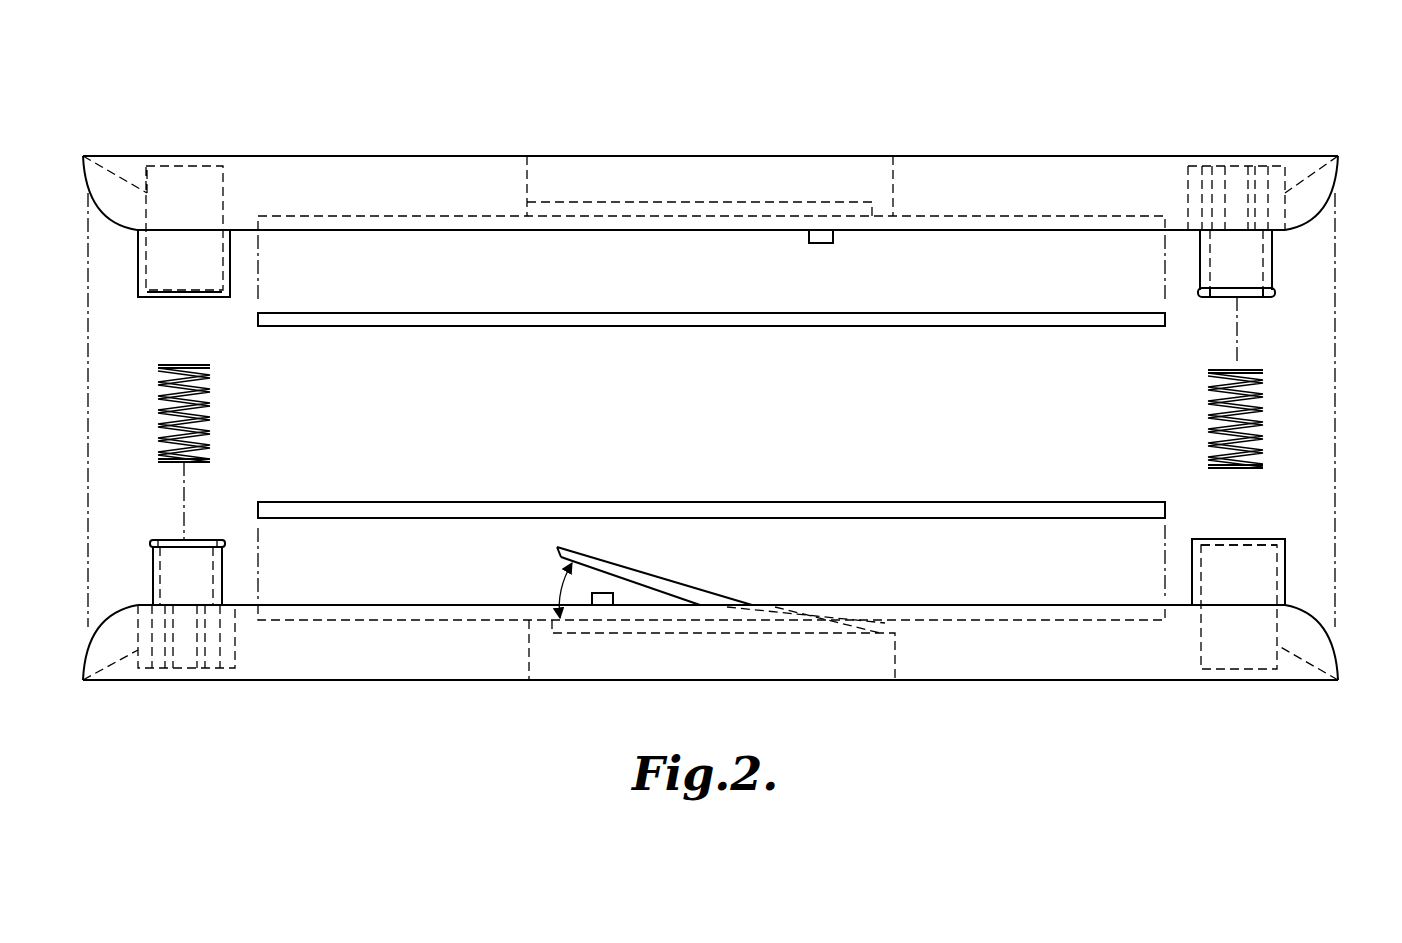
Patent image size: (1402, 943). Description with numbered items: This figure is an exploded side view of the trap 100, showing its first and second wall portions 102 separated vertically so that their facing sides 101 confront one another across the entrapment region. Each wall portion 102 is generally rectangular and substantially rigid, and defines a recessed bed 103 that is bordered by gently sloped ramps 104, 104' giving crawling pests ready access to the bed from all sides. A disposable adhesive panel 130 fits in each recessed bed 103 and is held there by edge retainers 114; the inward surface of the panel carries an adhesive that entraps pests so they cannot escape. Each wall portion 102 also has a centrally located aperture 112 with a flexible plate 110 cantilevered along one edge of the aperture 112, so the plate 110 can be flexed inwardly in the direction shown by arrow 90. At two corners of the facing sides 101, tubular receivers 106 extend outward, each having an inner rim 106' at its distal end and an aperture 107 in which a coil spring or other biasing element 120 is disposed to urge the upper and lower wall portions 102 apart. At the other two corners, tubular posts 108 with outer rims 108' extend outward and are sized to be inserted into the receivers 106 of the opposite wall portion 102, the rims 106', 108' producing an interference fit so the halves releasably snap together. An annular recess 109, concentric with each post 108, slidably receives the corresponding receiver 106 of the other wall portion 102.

The trap 100 is at (250, 100).
The wall portion 102 is at (357, 152).
The ramp 104 is at (710, 664).
The ramp 104' is at (734, 418).
The facing side 101 is at (427, 232).
The recessed bed 103 is at (360, 618).
The adhesive panel 130 is at (1020, 326).
The flexible plate 110 is at (707, 202).
The edge retainer 114 is at (826, 243).
The aperture 112 is at (530, 648).
The arrow 90 is at (566, 584).
The coil spring 120 is at (210, 365).
The tubular post 108 is at (162, 576).
The outer rim 108' is at (166, 521).
The annular recess 109 is at (227, 605).
The tubular receiver 106 is at (1262, 561).
The inner rim 106' is at (1239, 582).
The aperture 107 is at (1245, 560).